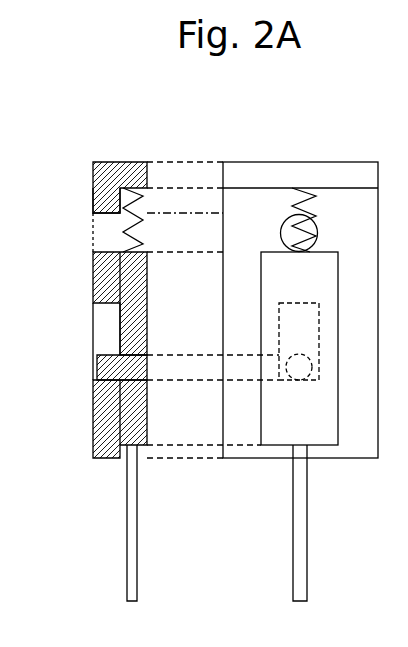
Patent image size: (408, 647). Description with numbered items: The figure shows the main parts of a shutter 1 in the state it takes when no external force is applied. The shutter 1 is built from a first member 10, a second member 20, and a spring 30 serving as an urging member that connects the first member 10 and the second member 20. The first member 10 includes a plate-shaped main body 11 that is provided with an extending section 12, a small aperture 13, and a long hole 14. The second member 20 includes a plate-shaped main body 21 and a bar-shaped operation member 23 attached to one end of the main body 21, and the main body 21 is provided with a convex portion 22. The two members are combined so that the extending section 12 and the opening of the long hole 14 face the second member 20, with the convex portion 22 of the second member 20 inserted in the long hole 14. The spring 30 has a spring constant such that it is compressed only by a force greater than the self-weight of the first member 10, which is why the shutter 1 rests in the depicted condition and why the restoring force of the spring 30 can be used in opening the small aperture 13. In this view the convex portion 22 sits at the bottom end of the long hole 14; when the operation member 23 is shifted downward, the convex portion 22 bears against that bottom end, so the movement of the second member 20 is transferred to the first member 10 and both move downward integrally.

The shutter 1 is at (186, 129).
The first member 10 is at (98, 145).
The main body 11 is at (92, 200).
The extending section 12 is at (127, 162).
The small aperture 13 is at (100, 240).
The long hole 14 is at (107, 330).
The second member 20 is at (154, 414).
The main body 21 is at (147, 303).
The convex portion 22 is at (102, 367).
The operation member 23 is at (135, 517).
The spring 30 is at (142, 227).